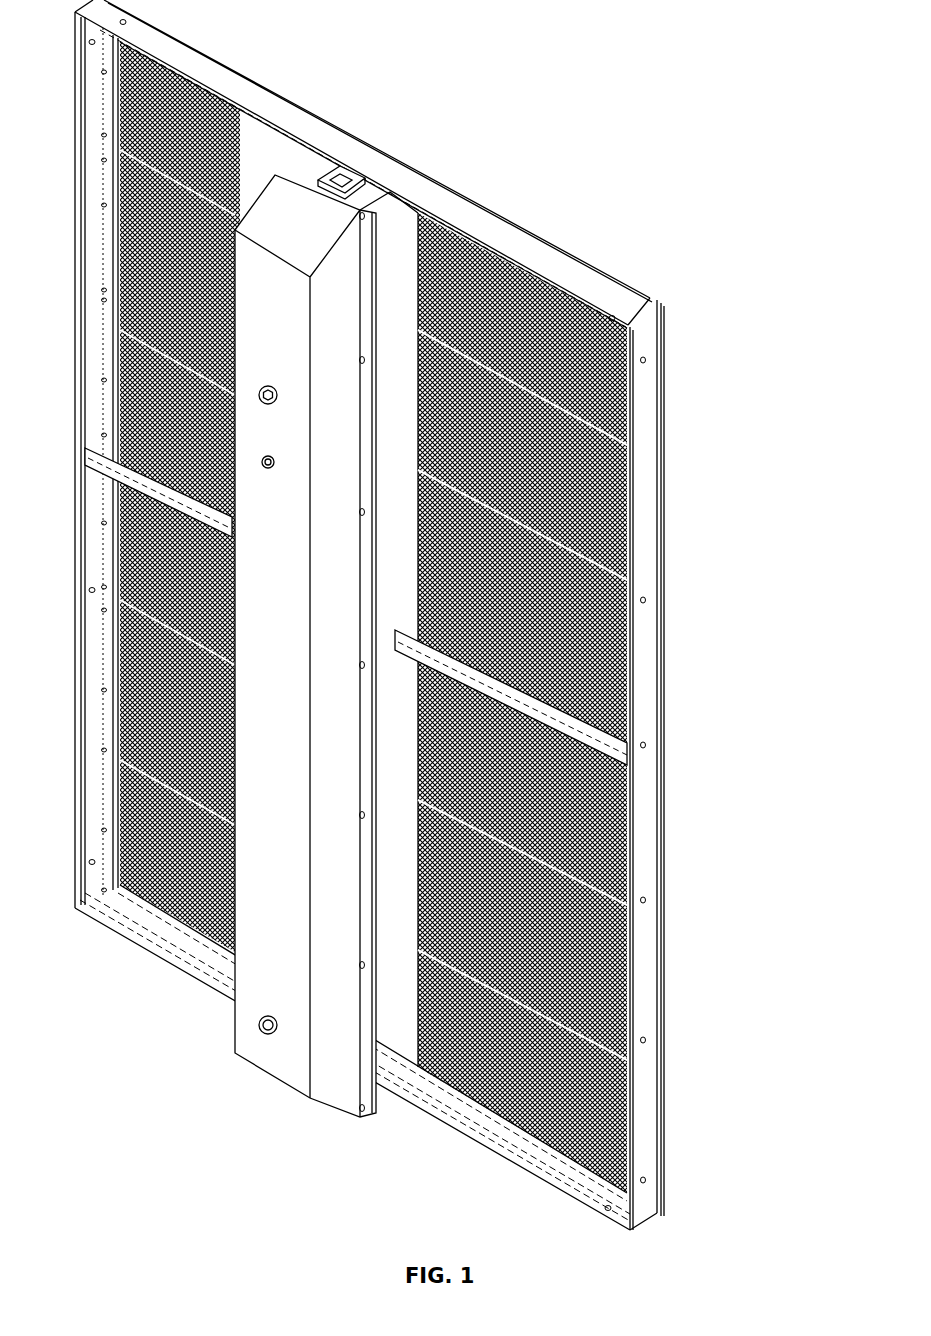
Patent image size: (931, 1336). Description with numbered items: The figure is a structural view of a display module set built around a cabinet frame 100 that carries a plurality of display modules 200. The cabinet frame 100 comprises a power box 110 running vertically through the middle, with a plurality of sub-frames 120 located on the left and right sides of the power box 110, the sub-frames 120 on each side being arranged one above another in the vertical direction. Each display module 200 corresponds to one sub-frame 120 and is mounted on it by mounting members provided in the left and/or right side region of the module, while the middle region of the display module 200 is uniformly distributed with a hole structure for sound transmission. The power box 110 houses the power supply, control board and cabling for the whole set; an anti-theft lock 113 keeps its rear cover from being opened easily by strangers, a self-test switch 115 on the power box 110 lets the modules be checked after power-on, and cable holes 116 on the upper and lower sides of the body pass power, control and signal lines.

The cabinet frame 100 is at (645, 344).
The display module 200 is at (610, 385).
The power box 110 is at (338, 1085).
The anti-theft lock 113 is at (268, 386).
The self-test switch 115 is at (268, 469).
The cable hole 116 is at (340, 170).
The sub-frame 120 is at (623, 1157).